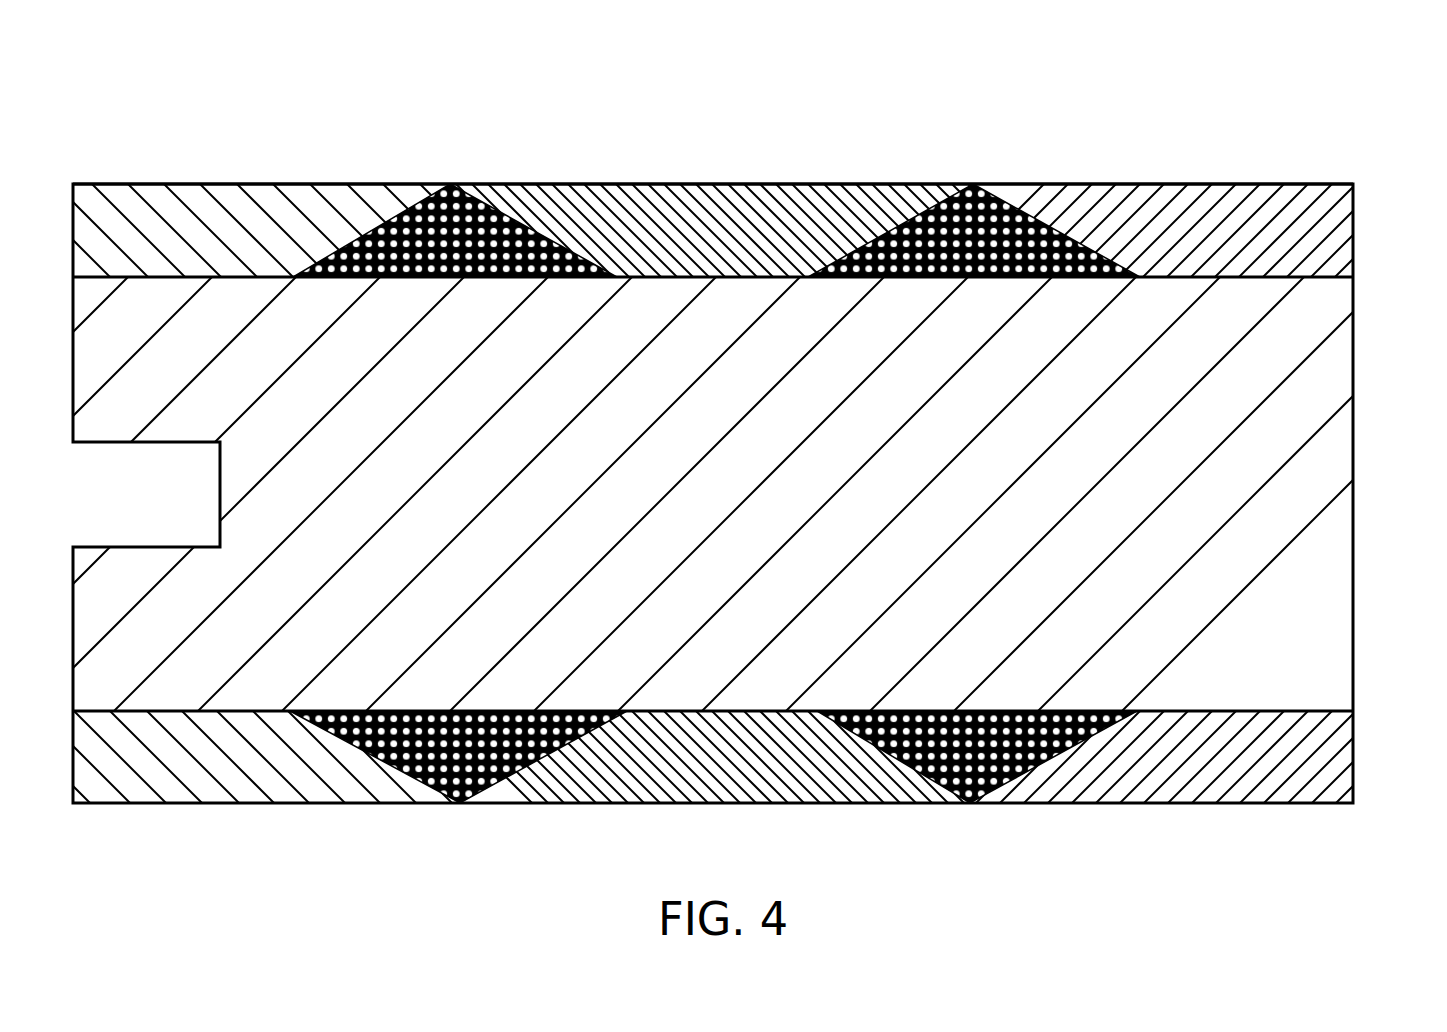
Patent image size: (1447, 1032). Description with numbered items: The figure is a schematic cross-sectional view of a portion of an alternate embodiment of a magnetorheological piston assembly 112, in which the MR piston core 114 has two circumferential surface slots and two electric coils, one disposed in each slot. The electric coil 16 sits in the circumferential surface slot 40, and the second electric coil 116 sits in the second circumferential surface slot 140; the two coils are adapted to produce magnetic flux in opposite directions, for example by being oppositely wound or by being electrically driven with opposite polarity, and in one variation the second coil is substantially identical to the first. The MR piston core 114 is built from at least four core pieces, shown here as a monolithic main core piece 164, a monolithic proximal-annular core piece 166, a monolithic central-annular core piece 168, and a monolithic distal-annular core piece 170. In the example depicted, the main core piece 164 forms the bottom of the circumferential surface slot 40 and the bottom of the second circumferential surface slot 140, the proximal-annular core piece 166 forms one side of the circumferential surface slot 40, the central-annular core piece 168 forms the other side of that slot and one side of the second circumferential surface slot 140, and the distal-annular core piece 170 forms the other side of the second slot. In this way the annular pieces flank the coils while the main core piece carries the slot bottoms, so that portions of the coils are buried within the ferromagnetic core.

The MR piston assembly 112 is at (1312, 102).
The MR piston core 114 is at (604, 172).
The main core piece 164 is at (1340, 358).
The proximal-annular core piece 166 is at (190, 200).
The central-annular core piece 168 is at (735, 200).
The distal-annular core piece 170 is at (1212, 200).
The circumferential surface slot 40 is at (455, 183).
The second circumferential surface slot 140 is at (977, 183).
The electric coil 16 is at (460, 805).
The second electric coil 116 is at (970, 805).